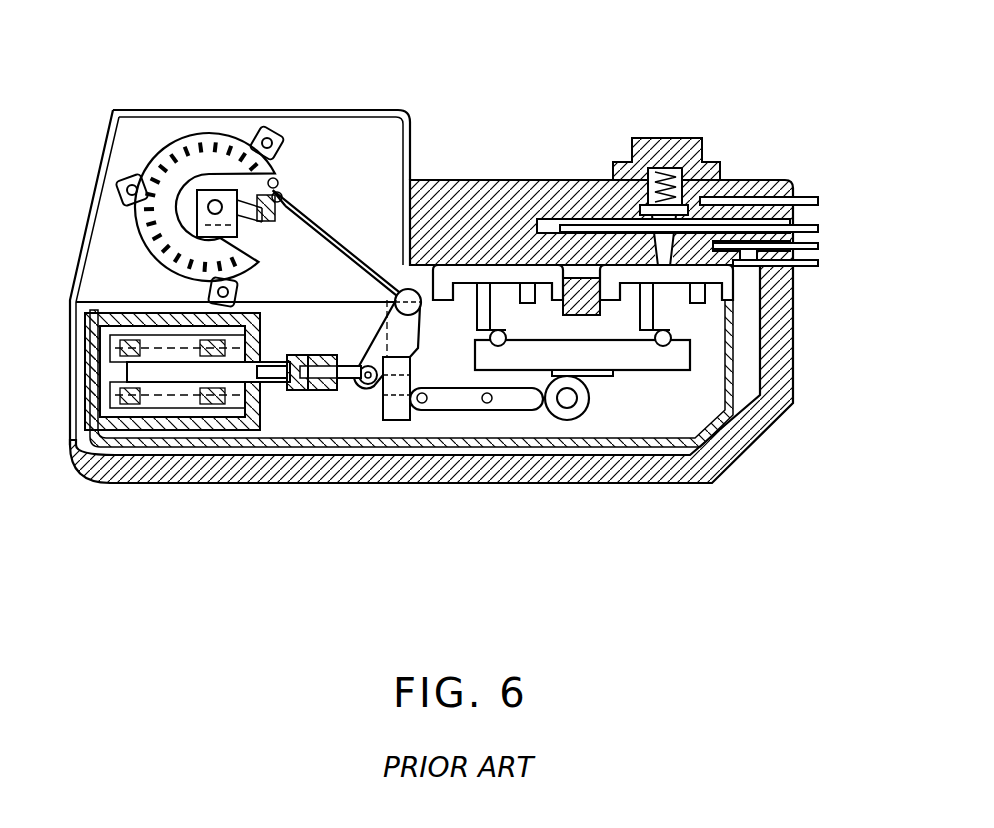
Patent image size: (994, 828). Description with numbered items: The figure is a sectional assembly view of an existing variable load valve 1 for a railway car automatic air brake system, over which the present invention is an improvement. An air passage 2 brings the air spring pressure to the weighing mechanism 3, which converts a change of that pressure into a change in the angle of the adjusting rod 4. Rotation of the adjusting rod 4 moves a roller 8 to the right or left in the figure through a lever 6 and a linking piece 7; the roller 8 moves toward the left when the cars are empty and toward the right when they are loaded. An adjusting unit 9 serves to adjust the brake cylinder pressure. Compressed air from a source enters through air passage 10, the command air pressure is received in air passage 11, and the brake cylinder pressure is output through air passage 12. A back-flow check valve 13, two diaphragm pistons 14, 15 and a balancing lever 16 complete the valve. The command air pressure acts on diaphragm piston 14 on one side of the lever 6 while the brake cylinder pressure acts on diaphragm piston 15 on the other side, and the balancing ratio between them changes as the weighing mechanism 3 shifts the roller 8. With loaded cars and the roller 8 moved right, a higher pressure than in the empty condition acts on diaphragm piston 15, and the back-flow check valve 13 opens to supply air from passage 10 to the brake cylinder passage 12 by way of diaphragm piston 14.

The variable load valve 1 is at (580, 176).
The air passage 2 is at (818, 263).
The weighing mechanism 3 is at (72, 445).
The adjusting rod 4 is at (410, 287).
The lever 6 is at (413, 410).
The linking piece 7 is at (458, 400).
The roller 8 is at (567, 403).
The adjusting unit 9 is at (611, 401).
The air passage 10 is at (818, 202).
The air passage 11 is at (818, 229).
The air passage 12 is at (818, 246).
The back-flow check valve 13 is at (665, 284).
The diaphragm piston 14 is at (490, 280).
The diaphragm piston 15 is at (690, 272).
The balancing lever 16 is at (645, 357).